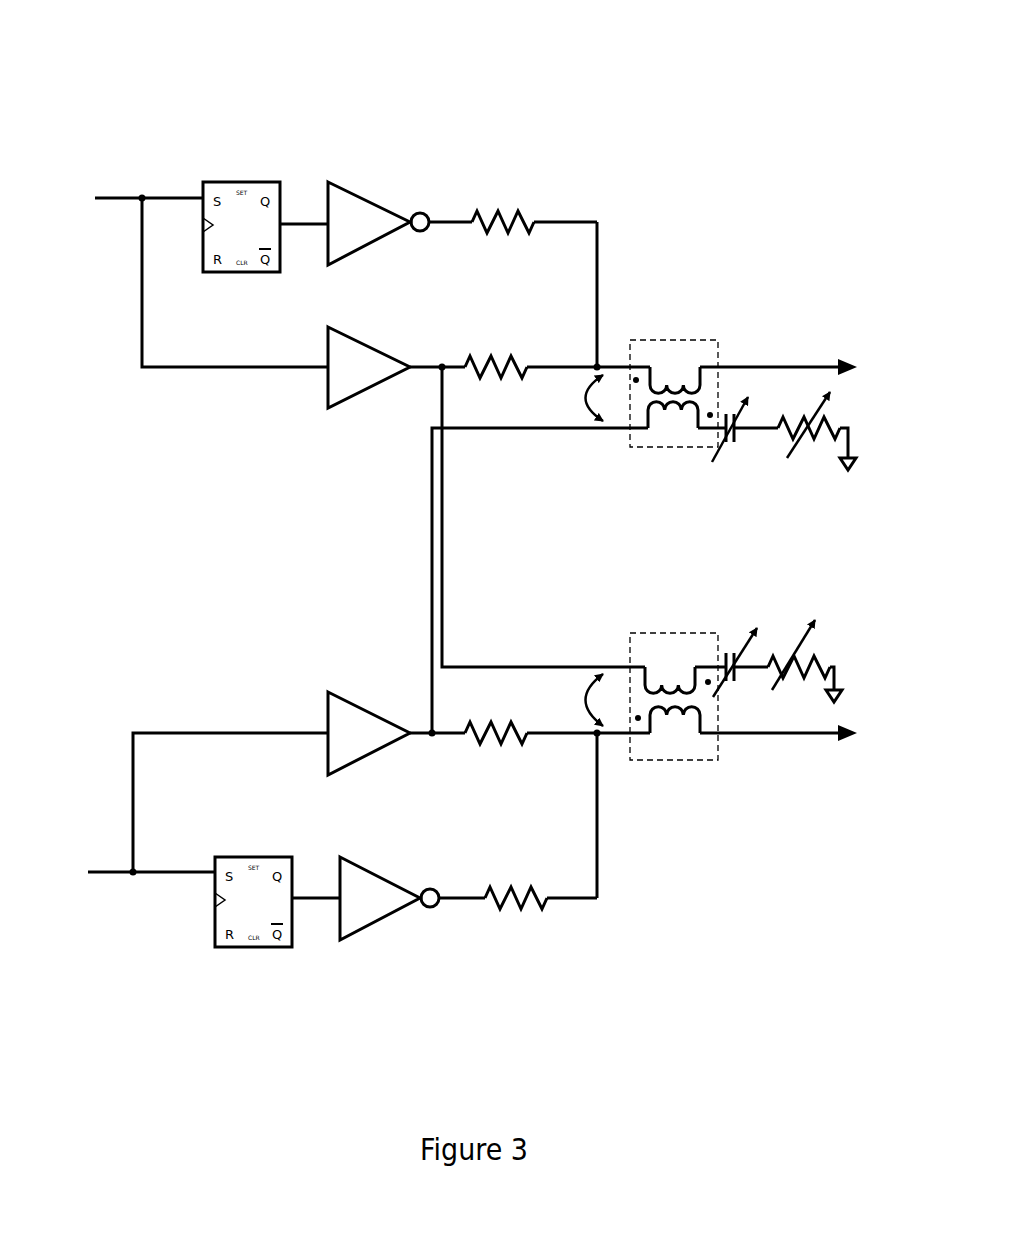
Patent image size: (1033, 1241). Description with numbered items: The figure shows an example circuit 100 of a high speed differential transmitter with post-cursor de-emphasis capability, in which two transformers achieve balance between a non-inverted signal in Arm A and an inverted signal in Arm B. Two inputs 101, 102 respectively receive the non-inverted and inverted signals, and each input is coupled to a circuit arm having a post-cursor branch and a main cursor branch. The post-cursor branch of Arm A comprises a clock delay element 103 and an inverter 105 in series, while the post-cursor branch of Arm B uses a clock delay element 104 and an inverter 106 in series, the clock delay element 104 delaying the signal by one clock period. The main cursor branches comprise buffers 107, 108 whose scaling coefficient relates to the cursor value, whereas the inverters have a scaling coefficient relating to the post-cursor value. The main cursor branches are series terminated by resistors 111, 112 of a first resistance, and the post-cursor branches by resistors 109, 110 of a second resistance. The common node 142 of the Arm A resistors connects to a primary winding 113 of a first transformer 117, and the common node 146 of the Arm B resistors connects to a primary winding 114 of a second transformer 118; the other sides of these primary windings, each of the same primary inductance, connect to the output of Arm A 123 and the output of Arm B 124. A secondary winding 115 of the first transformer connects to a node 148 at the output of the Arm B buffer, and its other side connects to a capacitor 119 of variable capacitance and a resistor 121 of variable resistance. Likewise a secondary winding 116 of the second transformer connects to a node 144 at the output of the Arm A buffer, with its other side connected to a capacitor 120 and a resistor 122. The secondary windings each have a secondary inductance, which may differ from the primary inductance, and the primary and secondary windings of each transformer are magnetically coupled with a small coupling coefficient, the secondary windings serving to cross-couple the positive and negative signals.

The high speed differential transmitter circuit 100 is at (762, 97).
The input 101 is at (75, 168).
The input 102 is at (86, 940).
The clock delay element 103 is at (240, 168).
The clock delay element 104 is at (252, 962).
The inverter 105 is at (368, 176).
The inverter 106 is at (397, 940).
The buffer 107 is at (348, 420).
The buffer 108 is at (358, 683).
The resistor 109 is at (490, 200).
The resistor 110 is at (518, 937).
The resistor 111 is at (505, 345).
The resistor 112 is at (495, 765).
The primary winding 113 is at (680, 325).
The primary winding 114 is at (685, 795).
The secondary winding 115 is at (668, 455).
The secondary winding 116 is at (672, 633).
The first transformer 117 is at (640, 445).
The second transformer 118 is at (630, 642).
The capacitor 119 is at (733, 455).
The capacitor 120 is at (735, 630).
The resistor 121 is at (818, 455).
The resistor 122 is at (798, 612).
The output of Arm A 123 is at (783, 325).
The output of Arm B 124 is at (783, 795).
The common node 142 is at (600, 365).
The node 144 is at (442, 367).
The common node 146 is at (597, 740).
The node 148 is at (432, 740).